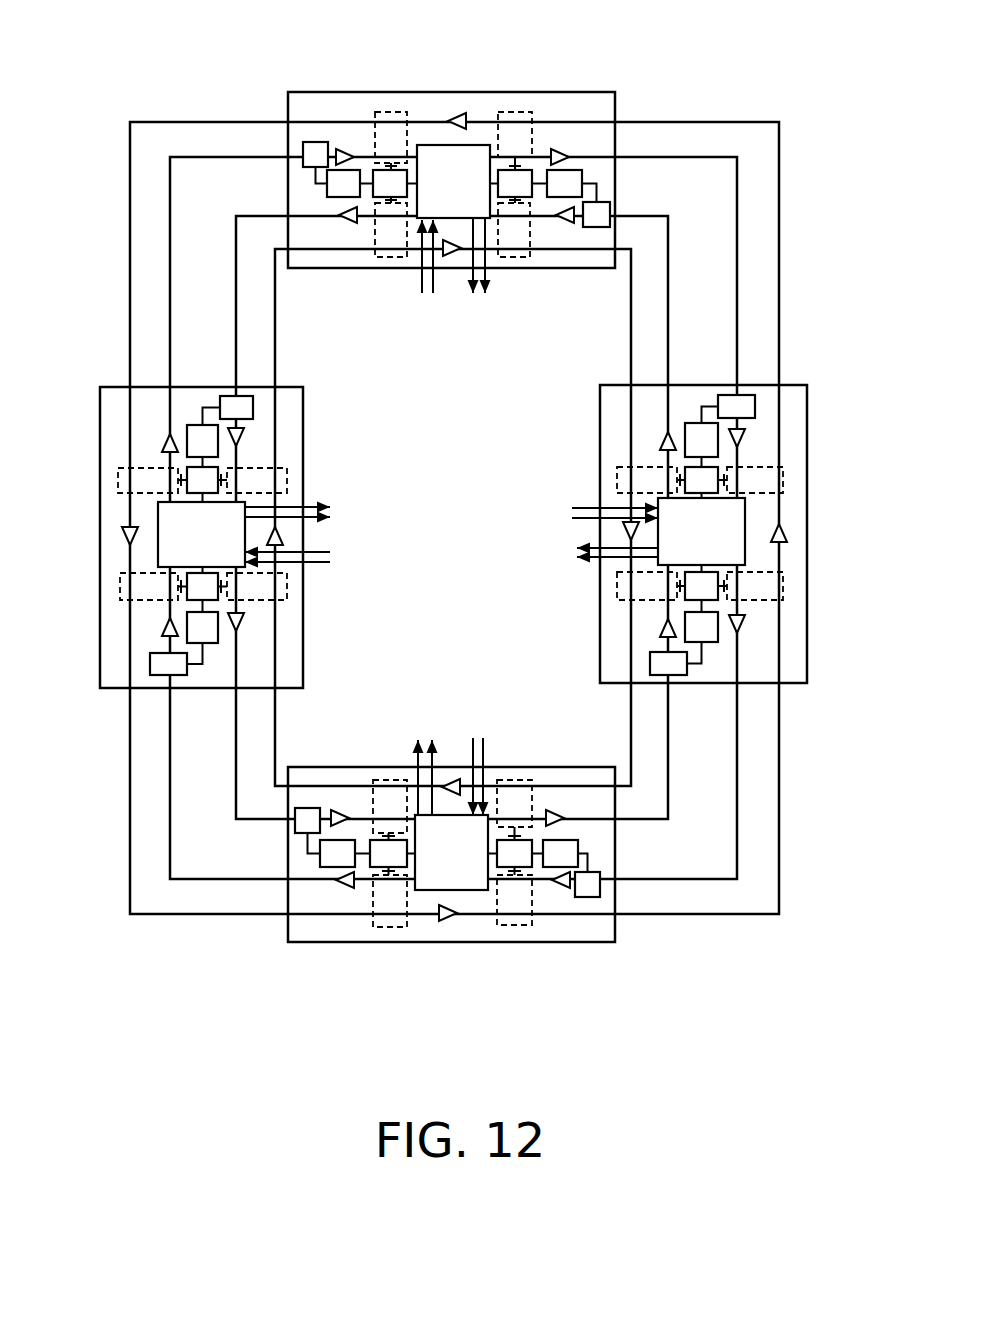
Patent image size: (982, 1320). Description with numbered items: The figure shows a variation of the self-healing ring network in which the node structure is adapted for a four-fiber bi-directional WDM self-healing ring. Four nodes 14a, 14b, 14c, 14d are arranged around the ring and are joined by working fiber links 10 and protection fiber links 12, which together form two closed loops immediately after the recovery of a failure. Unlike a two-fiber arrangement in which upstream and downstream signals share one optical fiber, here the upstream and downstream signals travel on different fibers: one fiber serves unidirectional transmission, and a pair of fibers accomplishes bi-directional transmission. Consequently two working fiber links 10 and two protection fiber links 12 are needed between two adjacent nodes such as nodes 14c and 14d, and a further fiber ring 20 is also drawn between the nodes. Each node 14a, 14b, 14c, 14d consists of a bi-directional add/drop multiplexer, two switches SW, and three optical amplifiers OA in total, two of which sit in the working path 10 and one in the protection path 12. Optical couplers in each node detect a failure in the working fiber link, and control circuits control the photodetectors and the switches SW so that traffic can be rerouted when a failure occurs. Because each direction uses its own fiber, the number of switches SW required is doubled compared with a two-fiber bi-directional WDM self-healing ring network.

The working fiber link 10 is at (667, 215).
The protection fiber link 12 is at (631, 297).
The node 14a is at (807, 485).
The node 14b is at (544, 92).
The node 14c is at (100, 608).
The node 14d is at (362, 943).
The protection optical fiber ring 20 is at (237, 783).
The optical amplifier OA is at (340, 150).
The switch SW is at (513, 260).